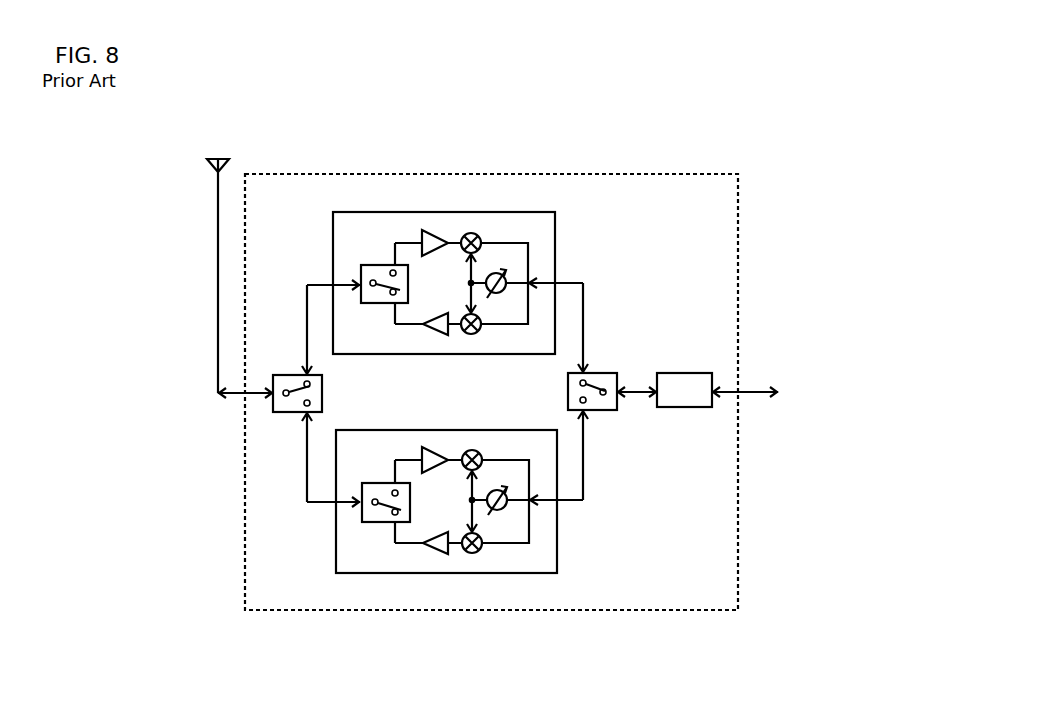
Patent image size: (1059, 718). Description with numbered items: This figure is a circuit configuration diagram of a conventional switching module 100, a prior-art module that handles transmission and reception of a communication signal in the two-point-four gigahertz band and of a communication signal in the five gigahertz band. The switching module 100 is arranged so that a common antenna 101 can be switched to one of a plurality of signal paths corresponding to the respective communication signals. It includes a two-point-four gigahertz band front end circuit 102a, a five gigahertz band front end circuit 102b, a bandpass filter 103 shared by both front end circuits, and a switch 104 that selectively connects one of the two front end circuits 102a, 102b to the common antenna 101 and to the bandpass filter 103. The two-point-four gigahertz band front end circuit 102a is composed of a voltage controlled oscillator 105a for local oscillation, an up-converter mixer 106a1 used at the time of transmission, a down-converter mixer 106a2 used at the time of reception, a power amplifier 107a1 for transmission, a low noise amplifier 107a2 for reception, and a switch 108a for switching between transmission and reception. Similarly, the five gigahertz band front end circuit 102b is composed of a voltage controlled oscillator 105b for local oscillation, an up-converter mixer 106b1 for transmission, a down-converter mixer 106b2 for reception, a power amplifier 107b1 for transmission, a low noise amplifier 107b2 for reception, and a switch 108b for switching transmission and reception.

The switching module 100 is at (610, 121).
The common antenna 101 is at (225, 136).
The 2.4 GHz band front end circuit 102a is at (484, 249).
The 5 GHz band front end circuit 102b is at (469, 524).
The bandpass filter 103 is at (680, 372).
The switch 104 is at (287, 374).
The voltage controlled oscillator 105a is at (507, 277).
The voltage controlled oscillator 105b is at (502, 510).
The up-converter mixer 106a1 is at (486, 334).
The down-converter mixer 106a2 is at (486, 233).
The up-converter mixer 106b1 is at (491, 553).
The down-converter mixer 106b2 is at (486, 451).
The power amplifier 107a1 is at (433, 334).
The low noise amplifier 107a2 is at (430, 230).
The power amplifier 107b1 is at (436, 554).
The low noise amplifier 107b2 is at (430, 449).
The switch 108a is at (373, 265).
The switch 108b is at (375, 522).